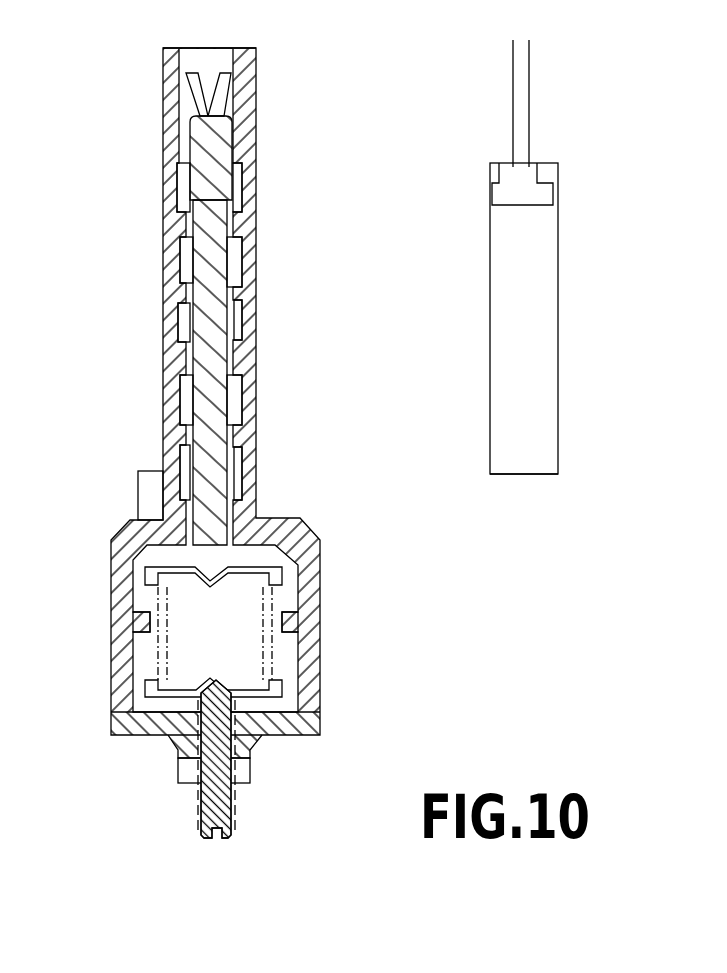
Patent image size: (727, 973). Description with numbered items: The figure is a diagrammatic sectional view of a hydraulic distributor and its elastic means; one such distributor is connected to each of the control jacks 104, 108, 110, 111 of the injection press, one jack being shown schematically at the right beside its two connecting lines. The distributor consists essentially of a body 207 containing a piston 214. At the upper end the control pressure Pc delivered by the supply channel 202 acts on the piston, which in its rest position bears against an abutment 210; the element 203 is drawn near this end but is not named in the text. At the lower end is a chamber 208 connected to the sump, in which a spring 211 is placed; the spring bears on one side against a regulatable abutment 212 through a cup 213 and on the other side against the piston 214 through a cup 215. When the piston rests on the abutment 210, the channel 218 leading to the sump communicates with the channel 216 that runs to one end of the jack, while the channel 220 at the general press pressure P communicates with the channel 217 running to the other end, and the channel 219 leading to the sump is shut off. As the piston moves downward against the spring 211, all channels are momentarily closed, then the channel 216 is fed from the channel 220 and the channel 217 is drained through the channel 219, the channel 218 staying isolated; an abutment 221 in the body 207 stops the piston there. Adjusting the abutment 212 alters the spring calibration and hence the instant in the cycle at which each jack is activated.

The supply channel 202 is at (256, 93).
The upper insulating block 203 is at (224, 104).
The body 207 is at (250, 325).
The chamber 208 is at (286, 588).
The abutment 210 is at (207, 80).
The spring 211 is at (267, 653).
The regulatable abutment 212 is at (222, 798).
The cup 213 is at (282, 690).
The piston 214 is at (214, 466).
The cup 215 is at (280, 566).
The channel 216 is at (490, 177).
The channel 217 is at (490, 467).
The channel 218 is at (163, 190).
The channel 219 is at (163, 471).
The channel 220 is at (178, 332).
The abutment 221 is at (140, 618).
The jack 104 is at (558, 283).
The jack 108 is at (586, 159).
The jack 110 is at (574, 232).
The jack 111 is at (572, 385).